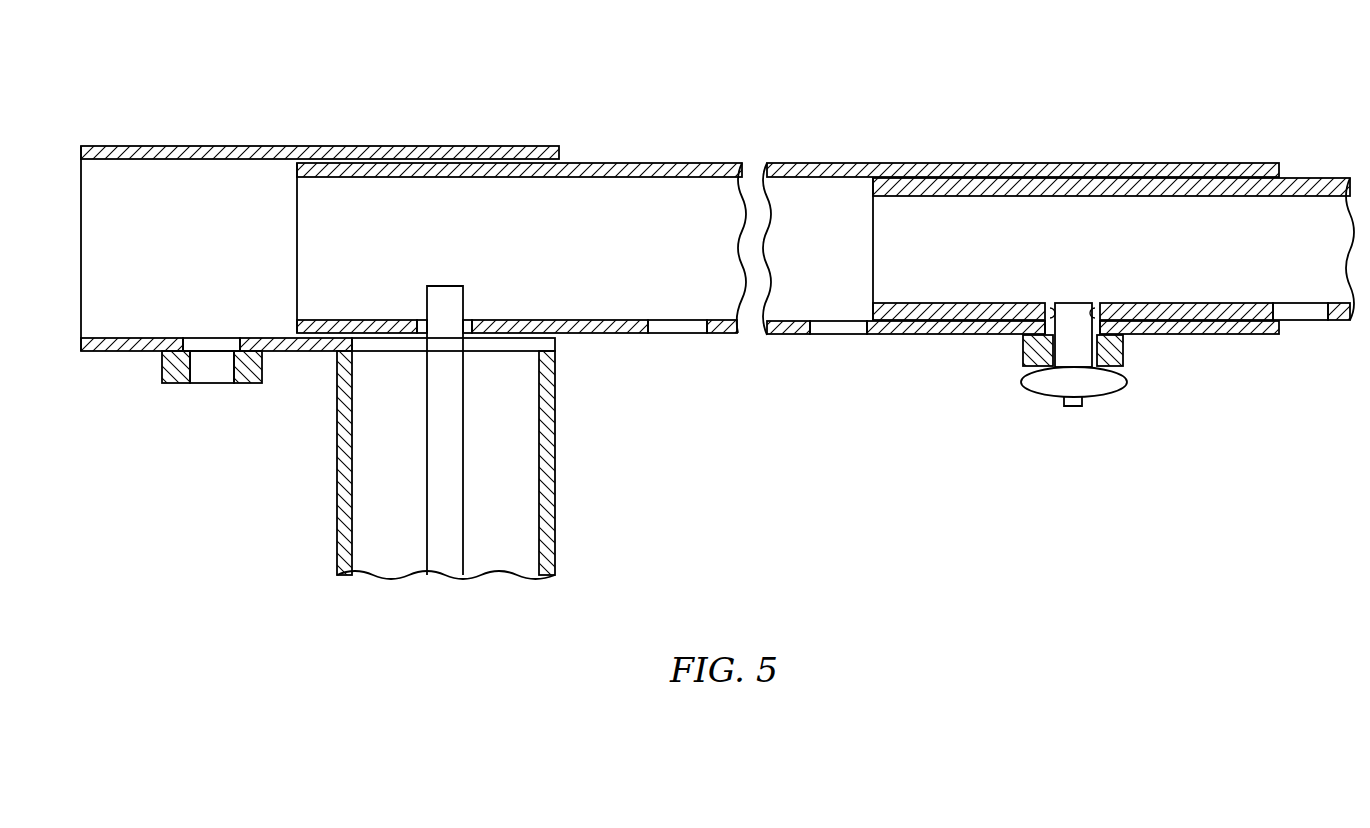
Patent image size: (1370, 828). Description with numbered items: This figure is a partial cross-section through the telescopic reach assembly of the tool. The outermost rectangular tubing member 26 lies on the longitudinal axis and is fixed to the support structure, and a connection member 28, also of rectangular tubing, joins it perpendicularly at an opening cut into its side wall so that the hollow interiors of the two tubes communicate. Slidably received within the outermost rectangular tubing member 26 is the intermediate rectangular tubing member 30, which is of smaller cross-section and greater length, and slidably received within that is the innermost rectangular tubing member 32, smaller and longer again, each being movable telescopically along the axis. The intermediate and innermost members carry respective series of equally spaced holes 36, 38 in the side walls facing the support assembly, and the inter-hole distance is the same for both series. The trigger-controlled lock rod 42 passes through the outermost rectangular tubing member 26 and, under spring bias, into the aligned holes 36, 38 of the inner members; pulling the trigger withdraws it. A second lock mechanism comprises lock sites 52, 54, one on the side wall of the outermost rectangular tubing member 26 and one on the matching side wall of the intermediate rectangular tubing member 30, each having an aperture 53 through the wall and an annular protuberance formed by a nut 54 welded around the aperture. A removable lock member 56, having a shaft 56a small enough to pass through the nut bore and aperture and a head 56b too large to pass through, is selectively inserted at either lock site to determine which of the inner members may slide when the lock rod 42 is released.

The outermost rectangular tubing member 26 is at (454, 146).
The connection member 28 is at (529, 490).
The intermediate rectangular tubing member 30 is at (1044, 170).
The innermost rectangular tubing member 32 is at (1305, 185).
The holes 36 is at (468, 330).
The holes 38 is at (1050, 303).
The lock rod 42 is at (456, 425).
The first lock site 52 is at (193, 392).
The aperture 53 is at (215, 340).
The nut 54 is at (163, 366).
The lock member 56 is at (1065, 355).
The shaft 56a is at (1073, 312).
The head 56b is at (1098, 393).